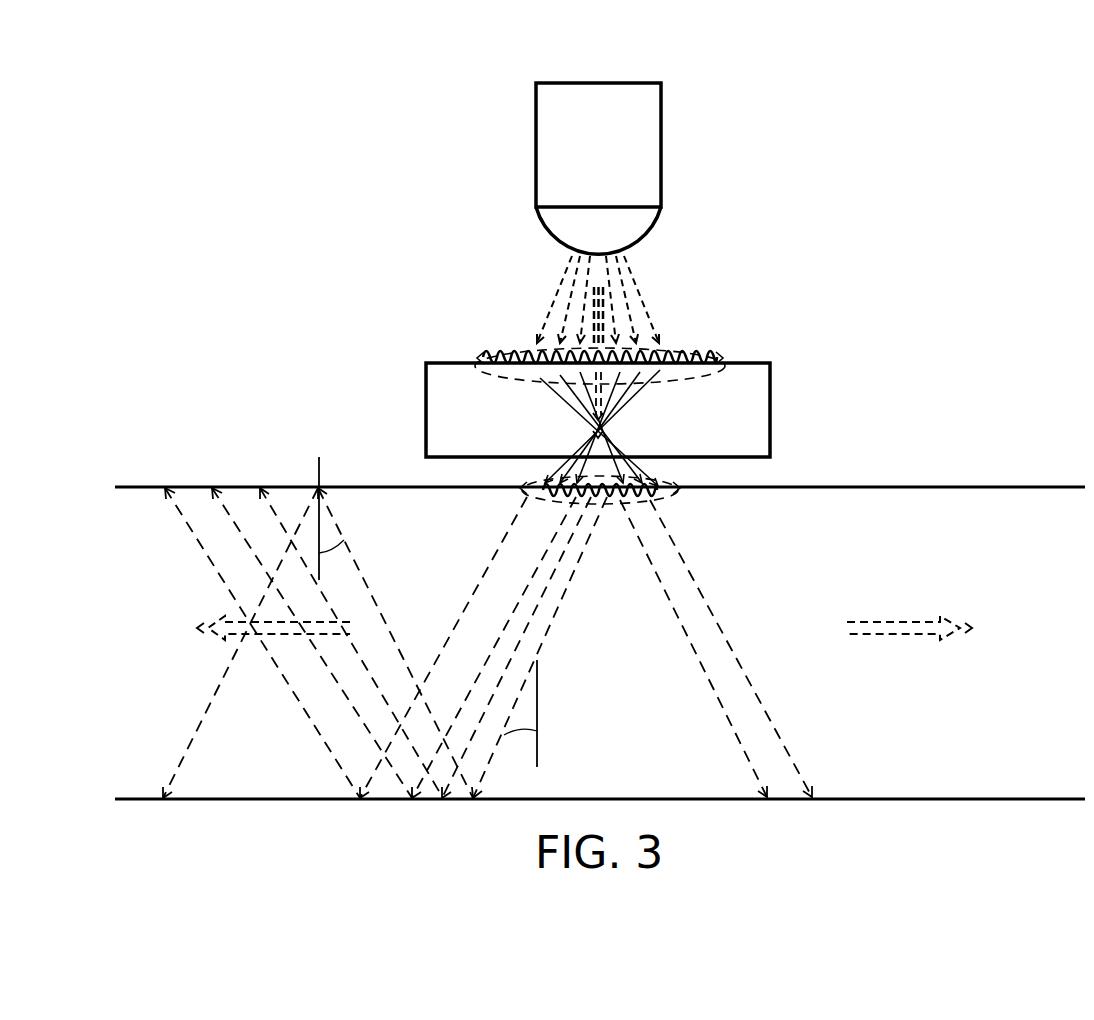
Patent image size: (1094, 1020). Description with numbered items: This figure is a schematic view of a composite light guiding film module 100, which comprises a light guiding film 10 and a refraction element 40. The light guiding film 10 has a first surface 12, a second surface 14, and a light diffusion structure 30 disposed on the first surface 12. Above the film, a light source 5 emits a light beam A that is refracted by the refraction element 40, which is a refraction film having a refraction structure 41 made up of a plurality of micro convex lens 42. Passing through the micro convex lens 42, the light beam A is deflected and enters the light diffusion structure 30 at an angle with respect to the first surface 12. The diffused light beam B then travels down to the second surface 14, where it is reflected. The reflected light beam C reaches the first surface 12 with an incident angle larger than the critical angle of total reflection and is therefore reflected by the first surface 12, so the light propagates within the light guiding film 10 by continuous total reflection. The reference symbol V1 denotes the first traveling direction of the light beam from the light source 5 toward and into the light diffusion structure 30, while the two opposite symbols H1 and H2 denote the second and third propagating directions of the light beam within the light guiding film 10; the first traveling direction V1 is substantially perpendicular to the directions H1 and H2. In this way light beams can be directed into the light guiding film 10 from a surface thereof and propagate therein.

The composite light guiding film module 100 is at (282, 83).
The light source 5 is at (661, 145).
The light guiding film 10 is at (600, 591).
The first surface 12 is at (912, 487).
The second surface 14 is at (912, 799).
The light diffusion structure 30 is at (680, 500).
The refraction element 40 is at (770, 410).
The refraction structure 41 is at (725, 372).
The micro convex lens 42 is at (512, 347).
The light beam A is at (632, 281).
The first traveling direction V1 is at (590, 325).
The diffused light beam B is at (718, 625).
The reflected light beam C is at (373, 603).
The second traveling direction H1 is at (251, 628).
The third traveling direction H2 is at (931, 628).